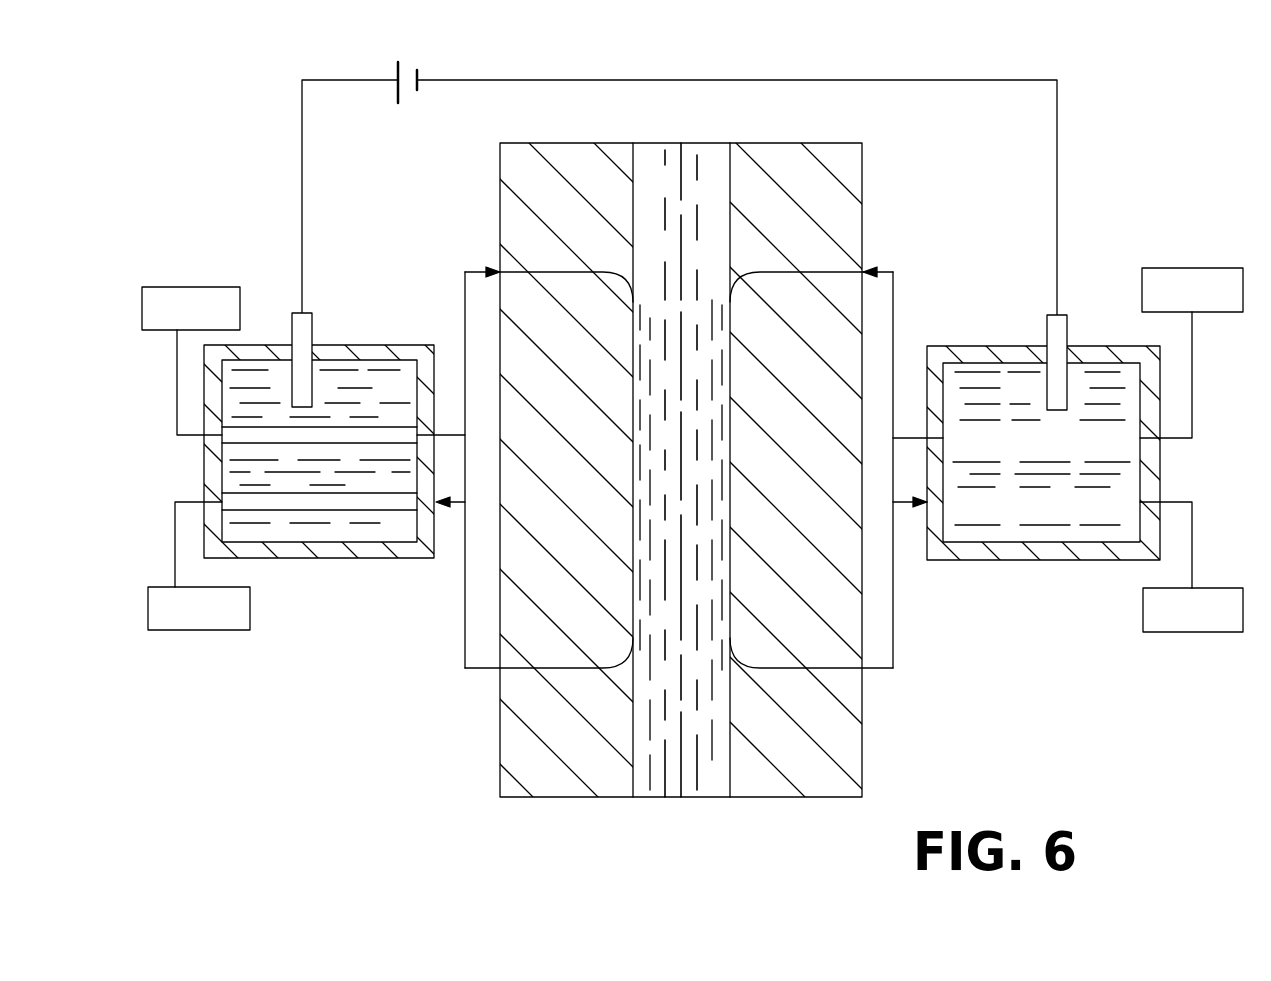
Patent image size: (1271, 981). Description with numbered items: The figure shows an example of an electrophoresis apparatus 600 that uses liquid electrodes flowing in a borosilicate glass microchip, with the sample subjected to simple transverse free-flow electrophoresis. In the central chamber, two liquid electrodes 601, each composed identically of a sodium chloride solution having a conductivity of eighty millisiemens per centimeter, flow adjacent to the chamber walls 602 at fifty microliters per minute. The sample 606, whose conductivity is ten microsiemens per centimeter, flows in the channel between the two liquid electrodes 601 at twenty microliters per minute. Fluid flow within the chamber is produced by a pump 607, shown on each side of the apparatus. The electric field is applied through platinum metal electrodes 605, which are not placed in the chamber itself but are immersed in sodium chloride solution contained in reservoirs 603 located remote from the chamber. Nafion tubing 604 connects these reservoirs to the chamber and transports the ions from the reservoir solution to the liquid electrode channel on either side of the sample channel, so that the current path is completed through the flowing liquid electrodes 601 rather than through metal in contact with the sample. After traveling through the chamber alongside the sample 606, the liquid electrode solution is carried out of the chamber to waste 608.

The electrophoresis apparatus 600 is at (1110, 128).
The liquid electrodes 601 is at (653, 438).
The chamber walls 602 is at (634, 179).
The reservoirs 603 is at (322, 560).
The Nafion tubing 604 is at (388, 435).
The platinum metal electrodes 605 is at (313, 328).
The sample 606 is at (678, 770).
The pump 607 is at (692, 353).
The waste 608 is at (695, 567).